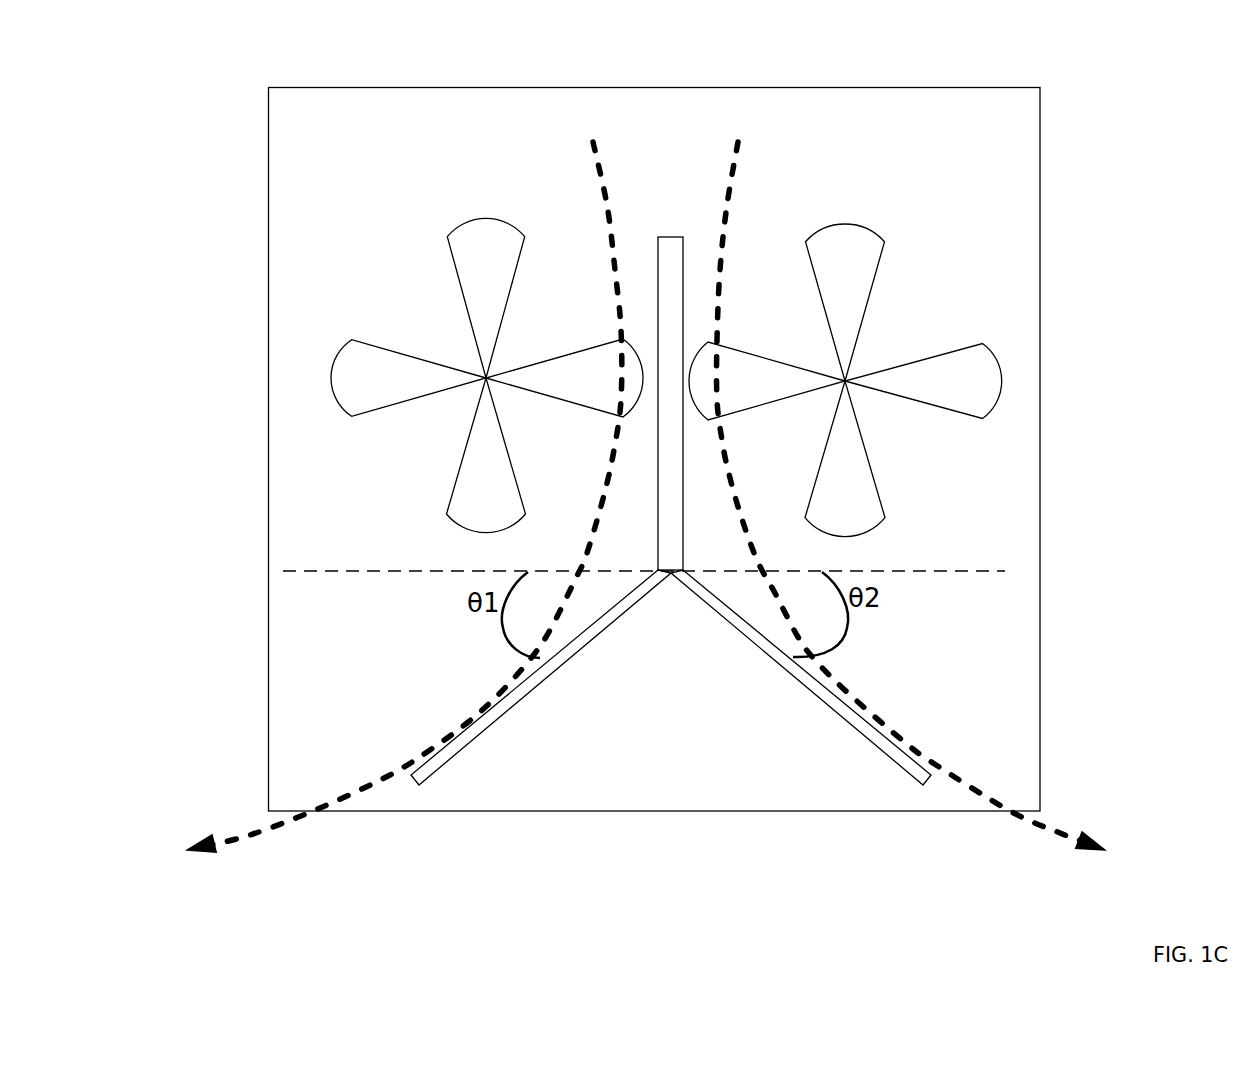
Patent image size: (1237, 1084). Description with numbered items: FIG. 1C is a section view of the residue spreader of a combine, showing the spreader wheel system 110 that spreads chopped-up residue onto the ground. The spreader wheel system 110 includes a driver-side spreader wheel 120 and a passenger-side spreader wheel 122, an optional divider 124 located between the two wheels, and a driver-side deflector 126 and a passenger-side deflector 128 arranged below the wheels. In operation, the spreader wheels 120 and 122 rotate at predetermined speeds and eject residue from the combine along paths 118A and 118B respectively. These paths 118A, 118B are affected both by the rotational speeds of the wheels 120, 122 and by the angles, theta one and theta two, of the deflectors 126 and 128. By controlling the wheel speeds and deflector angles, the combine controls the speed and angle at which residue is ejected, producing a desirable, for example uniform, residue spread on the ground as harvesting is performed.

The spreader wheel system 110 is at (688, 67).
The path 118A is at (397, 497).
The path 118B is at (940, 496).
The driver-side spreader wheel 120 is at (480, 213).
The passenger-side spreader wheel 122 is at (848, 223).
The divider 124 is at (671, 233).
The driver-side deflector 126 is at (529, 702).
The passenger-side deflector 128 is at (812, 708).